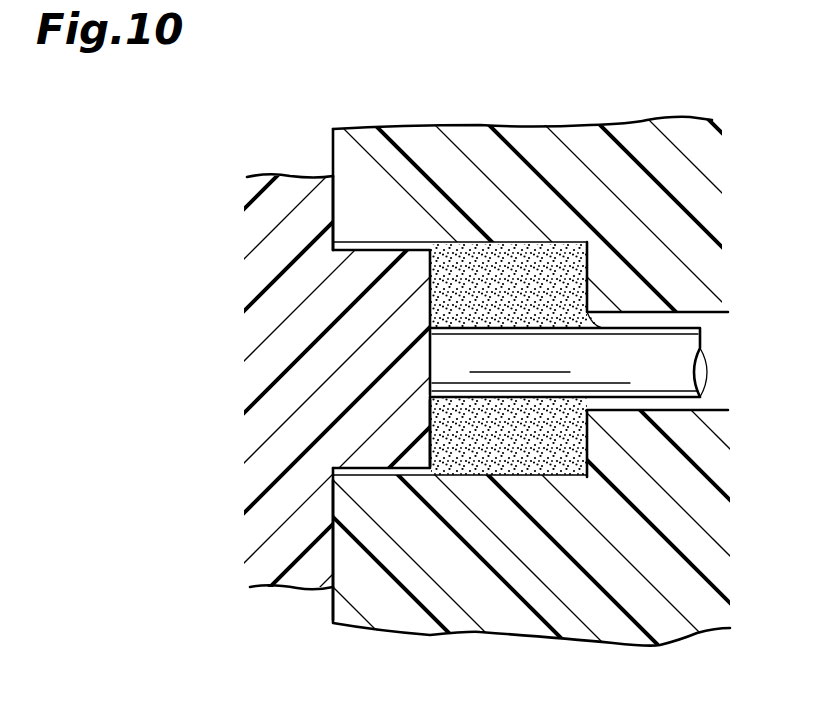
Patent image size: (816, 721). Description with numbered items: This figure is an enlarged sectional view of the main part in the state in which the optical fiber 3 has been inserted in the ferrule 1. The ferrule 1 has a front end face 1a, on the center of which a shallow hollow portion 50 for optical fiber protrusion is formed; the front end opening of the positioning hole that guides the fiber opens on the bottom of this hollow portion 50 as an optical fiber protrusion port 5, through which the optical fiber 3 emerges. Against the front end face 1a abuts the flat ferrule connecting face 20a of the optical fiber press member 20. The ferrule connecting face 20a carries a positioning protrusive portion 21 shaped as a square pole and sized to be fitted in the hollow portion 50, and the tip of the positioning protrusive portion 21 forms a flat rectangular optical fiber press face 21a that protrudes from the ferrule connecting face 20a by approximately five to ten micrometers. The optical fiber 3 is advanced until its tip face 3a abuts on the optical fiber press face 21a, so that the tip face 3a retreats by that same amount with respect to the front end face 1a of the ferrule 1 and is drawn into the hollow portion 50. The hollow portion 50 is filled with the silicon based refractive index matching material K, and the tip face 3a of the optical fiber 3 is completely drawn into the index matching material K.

The ferrule 1 is at (684, 118).
The front end face of the ferrule 1a is at (333, 508).
The optical fiber 3 is at (663, 342).
The tip face of the optical fiber 3a is at (430, 357).
The optical fiber protrusion port 5 is at (580, 318).
The optical fiber press member 20 is at (281, 170).
The ferrule connecting face 20a is at (336, 210).
The positioning protrusive portion 21 is at (390, 280).
The optical fiber press face 21a is at (440, 440).
The hollow portion 50 is at (523, 473).
The refractive index matching material K is at (513, 270).